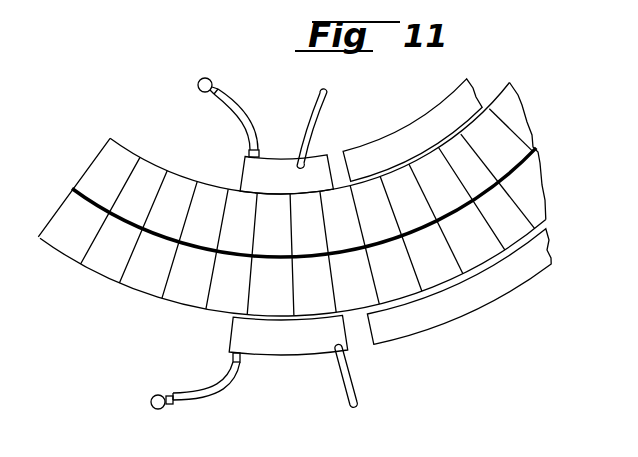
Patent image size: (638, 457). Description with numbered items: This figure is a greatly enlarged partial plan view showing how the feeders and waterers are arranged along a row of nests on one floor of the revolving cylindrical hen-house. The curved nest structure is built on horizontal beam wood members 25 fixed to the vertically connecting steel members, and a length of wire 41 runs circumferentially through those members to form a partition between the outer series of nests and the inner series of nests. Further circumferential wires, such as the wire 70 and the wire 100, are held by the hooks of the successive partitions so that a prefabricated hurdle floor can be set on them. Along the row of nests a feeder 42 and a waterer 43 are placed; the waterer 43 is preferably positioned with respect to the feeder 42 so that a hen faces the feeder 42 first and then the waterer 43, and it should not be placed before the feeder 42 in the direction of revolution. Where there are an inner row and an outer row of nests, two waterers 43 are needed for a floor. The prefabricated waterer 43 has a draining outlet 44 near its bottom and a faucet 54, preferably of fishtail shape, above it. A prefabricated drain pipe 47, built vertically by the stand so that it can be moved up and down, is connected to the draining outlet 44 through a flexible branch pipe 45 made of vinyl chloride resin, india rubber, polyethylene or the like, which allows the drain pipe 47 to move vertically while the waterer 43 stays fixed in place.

The horizontal beam wood member 25 is at (503, 190).
The wire 41 is at (454, 216).
The feeder 42 is at (408, 135).
The waterer 43 is at (319, 157).
The draining outlet 44 is at (247, 153).
The flexible branch pipe 45 is at (245, 112).
The drain pipe 47 is at (198, 88).
The faucet 54 is at (313, 112).
The wire 70 is at (390, 300).
The wire 100 is at (410, 167).